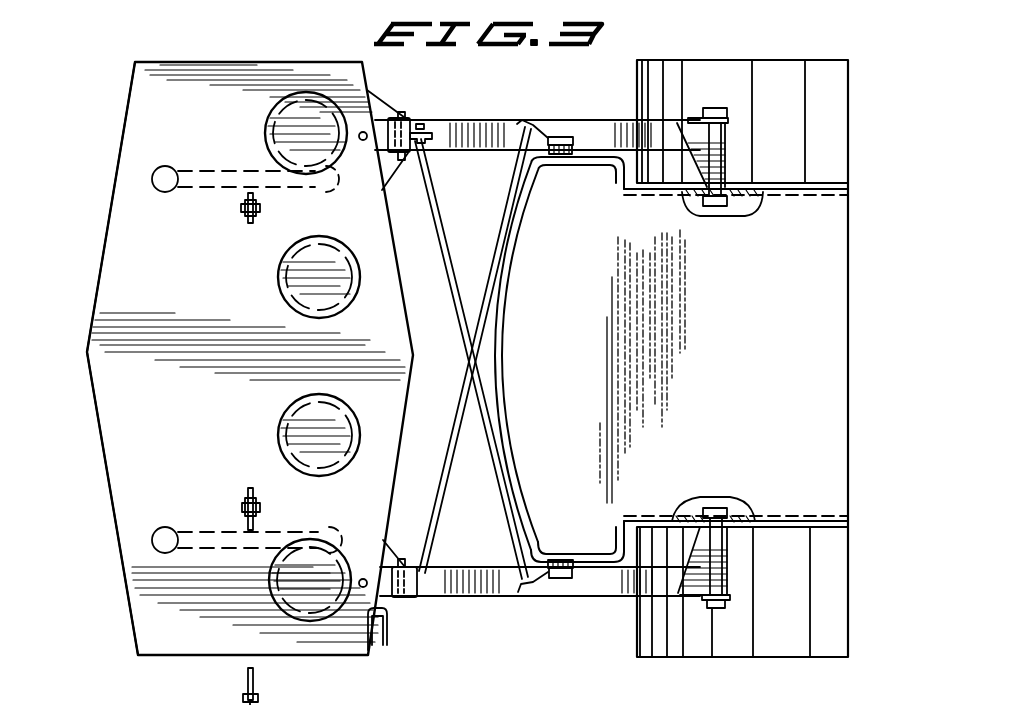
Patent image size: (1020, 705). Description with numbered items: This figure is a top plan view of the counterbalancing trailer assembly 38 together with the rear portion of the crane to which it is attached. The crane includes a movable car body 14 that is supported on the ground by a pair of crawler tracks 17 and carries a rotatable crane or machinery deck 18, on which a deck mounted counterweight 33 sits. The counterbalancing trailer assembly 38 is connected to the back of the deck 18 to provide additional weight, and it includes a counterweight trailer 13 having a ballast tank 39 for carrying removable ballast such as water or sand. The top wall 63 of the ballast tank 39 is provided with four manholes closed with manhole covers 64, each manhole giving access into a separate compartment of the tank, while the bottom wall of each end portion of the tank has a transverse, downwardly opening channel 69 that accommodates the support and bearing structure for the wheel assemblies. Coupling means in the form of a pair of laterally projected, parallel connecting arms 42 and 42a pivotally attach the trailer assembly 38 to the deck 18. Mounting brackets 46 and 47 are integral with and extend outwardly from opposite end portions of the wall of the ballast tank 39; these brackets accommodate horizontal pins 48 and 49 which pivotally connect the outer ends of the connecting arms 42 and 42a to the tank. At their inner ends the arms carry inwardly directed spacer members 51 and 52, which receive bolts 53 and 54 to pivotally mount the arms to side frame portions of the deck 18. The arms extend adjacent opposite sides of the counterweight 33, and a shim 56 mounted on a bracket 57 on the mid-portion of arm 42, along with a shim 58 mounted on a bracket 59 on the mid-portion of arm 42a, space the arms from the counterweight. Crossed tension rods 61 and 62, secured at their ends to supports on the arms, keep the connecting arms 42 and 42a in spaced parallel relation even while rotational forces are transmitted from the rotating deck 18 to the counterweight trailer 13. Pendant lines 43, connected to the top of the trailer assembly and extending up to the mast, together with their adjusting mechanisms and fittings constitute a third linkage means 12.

The third linkage means 12 is at (272, 702).
The counterweight trailer 13 is at (133, 624).
The car body 14 is at (700, 646).
The crawler tracks 17 is at (700, 78).
The rotatable crane or machinery deck 18 is at (745, 512).
The deck mounted counterweight 33 is at (552, 475).
The counterbalancing trailer assembly 38 is at (107, 512).
The ballast tank 39 is at (95, 270).
The connecting arm 42 is at (487, 600).
The connecting arm 42a is at (480, 122).
The pendant lines 43 is at (247, 487).
The mounting bracket 46 is at (400, 556).
The mounting bracket 47 is at (368, 90).
The horizontal pin 48 is at (400, 602).
The horizontal pin 49 is at (408, 162).
The spacer member 51 is at (722, 572).
The spacer member 52 is at (722, 160).
The bolt 53 is at (730, 601).
The bolt 54 is at (722, 110).
The shim 56 is at (575, 560).
The bracket 57 is at (572, 588).
The shim 58 is at (566, 154).
The bracket 59 is at (572, 137).
The tension rod 61 is at (462, 302).
The tension rod 62 is at (490, 272).
The top wall 63 is at (125, 432).
The manhole covers 64 is at (320, 143).
The channel 69 is at (192, 530).